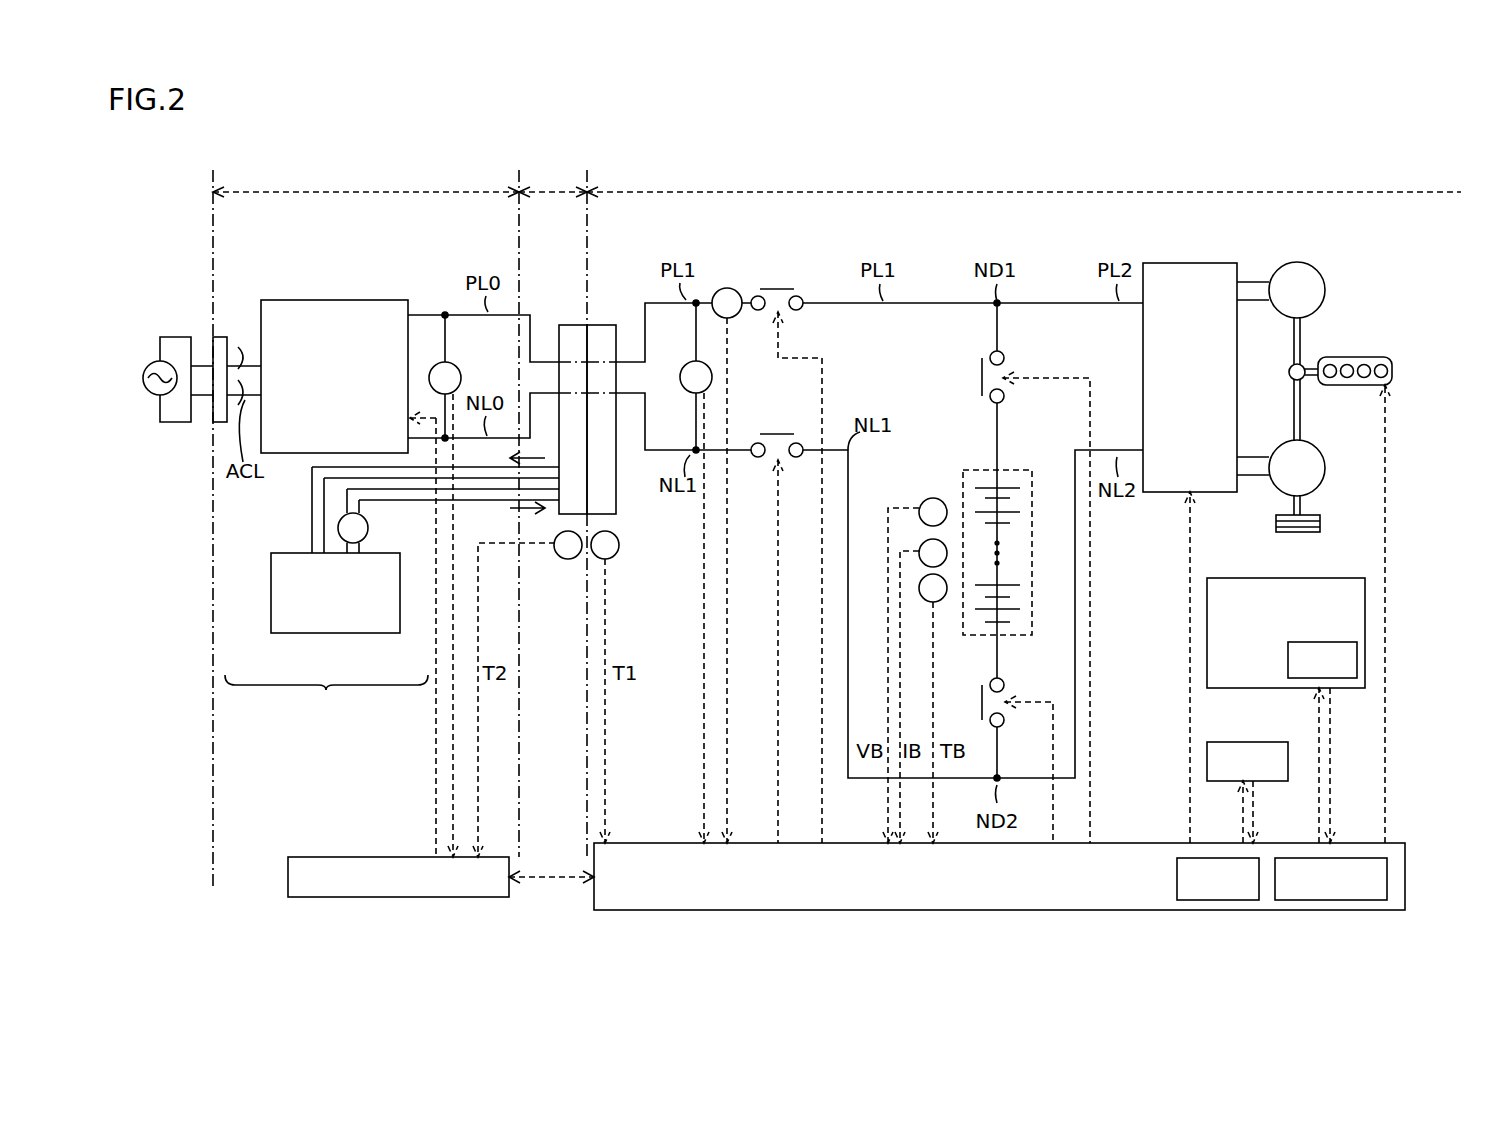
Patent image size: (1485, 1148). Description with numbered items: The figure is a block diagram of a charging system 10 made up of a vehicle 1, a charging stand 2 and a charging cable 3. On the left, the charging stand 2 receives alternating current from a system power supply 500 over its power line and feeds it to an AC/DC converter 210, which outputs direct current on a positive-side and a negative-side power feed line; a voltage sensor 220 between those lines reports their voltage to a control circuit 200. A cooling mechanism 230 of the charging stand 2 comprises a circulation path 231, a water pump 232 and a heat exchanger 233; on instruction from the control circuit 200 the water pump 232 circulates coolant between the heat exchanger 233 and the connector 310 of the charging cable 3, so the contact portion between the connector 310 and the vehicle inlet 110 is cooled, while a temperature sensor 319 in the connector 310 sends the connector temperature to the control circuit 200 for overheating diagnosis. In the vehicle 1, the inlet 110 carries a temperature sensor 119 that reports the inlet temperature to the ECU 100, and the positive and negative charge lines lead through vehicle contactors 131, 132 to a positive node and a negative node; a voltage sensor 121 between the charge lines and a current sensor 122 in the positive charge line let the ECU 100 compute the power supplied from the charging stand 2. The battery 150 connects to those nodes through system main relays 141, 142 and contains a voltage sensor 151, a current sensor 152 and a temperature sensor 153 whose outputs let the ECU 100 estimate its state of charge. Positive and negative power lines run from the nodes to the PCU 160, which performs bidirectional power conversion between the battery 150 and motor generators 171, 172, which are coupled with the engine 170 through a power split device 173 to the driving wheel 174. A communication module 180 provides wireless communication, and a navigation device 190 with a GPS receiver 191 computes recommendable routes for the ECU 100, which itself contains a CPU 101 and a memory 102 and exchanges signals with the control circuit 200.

The vehicle 1 is at (1024, 180).
The charging stand 2 is at (366, 180).
The charging cable 3 is at (553, 180).
The charging system 10 is at (1068, 151).
The electronic control unit 100 is at (1118, 843).
The CPU 101 is at (1215, 858).
The memory 102 is at (1358, 858).
The inlet 110 is at (606, 324).
The temperature sensor 119 is at (617, 556).
The voltage sensor 121 is at (686, 366).
The current sensor 122 is at (727, 287).
The vehicle contactor 131 is at (780, 287).
The vehicle contactor 132 is at (780, 432).
The system main relay 141 is at (980, 368).
The system main relay 142 is at (1005, 716).
The battery 150 is at (975, 470).
The voltage sensor 151 is at (930, 497).
The current sensor 152 is at (919, 548).
The temperature sensor 153 is at (922, 600).
The power control unit 160 is at (1190, 263).
The engine 170 is at (1377, 357).
The motor generator 171 is at (1326, 290).
The motor generator 172 is at (1326, 468).
The power split device 173 is at (1306, 366).
The driving wheel 174 is at (1318, 513).
The communication module 180 is at (1261, 742).
The navigation device 190 is at (1339, 578).
The GPS receiver 191 is at (1357, 658).
The control circuit 200 is at (318, 857).
The AC/DC converter 210 is at (360, 300).
The voltage sensor 220 is at (444, 362).
The cooling mechanism 230 is at (326, 694).
The circulation path 231 is at (345, 503).
The water pump 232 is at (368, 530).
The heat exchanger 233 is at (334, 633).
The connector 310 is at (568, 324).
The temperature sensor 319 is at (557, 556).
The system power supply 500 is at (148, 395).